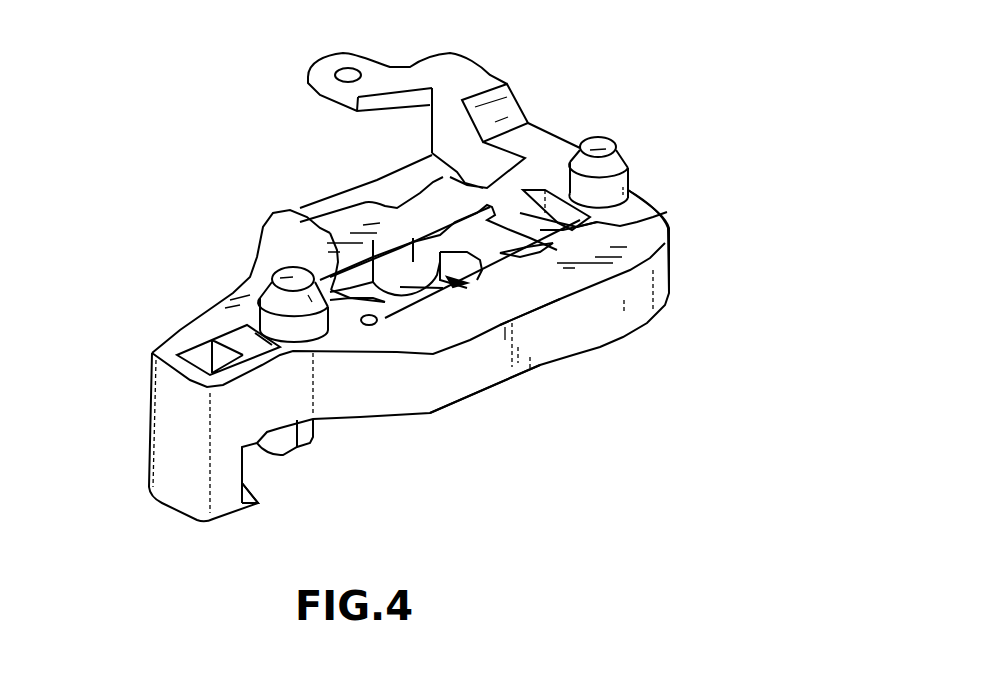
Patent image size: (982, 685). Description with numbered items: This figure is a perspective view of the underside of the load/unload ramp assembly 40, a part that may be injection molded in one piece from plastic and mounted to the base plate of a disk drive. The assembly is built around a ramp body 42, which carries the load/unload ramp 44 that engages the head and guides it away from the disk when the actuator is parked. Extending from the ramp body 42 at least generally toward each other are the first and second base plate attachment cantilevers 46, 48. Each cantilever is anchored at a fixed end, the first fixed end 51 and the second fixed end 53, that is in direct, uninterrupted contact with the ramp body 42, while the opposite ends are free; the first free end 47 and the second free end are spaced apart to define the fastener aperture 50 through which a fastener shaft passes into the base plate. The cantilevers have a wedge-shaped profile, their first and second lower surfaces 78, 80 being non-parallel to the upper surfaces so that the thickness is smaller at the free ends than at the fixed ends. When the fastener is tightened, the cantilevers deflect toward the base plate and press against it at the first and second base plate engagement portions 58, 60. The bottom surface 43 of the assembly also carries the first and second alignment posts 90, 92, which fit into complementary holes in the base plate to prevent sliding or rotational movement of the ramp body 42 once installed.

The load/unload ramp assembly 40 is at (120, 303).
The ramp body 42 is at (507, 293).
The bottom surface 43 is at (263, 230).
The load/unload ramp 44 is at (257, 489).
The first base plate attachment cantilever 46 is at (503, 232).
The first free end 47 is at (474, 265).
The second base plate attachment cantilever 48 is at (371, 303).
The fastener aperture 50 is at (408, 290).
The first fixed end 51 is at (490, 230).
The second fixed end 53 is at (327, 223).
The first base plate engagement portion 58 is at (667, 212).
The second base plate engagement portion 60 is at (350, 298).
The first lower surface 78 is at (492, 258).
The second lower surface 80 is at (385, 302).
The first alignment post 90 is at (613, 142).
The second alignment post 92 is at (270, 272).